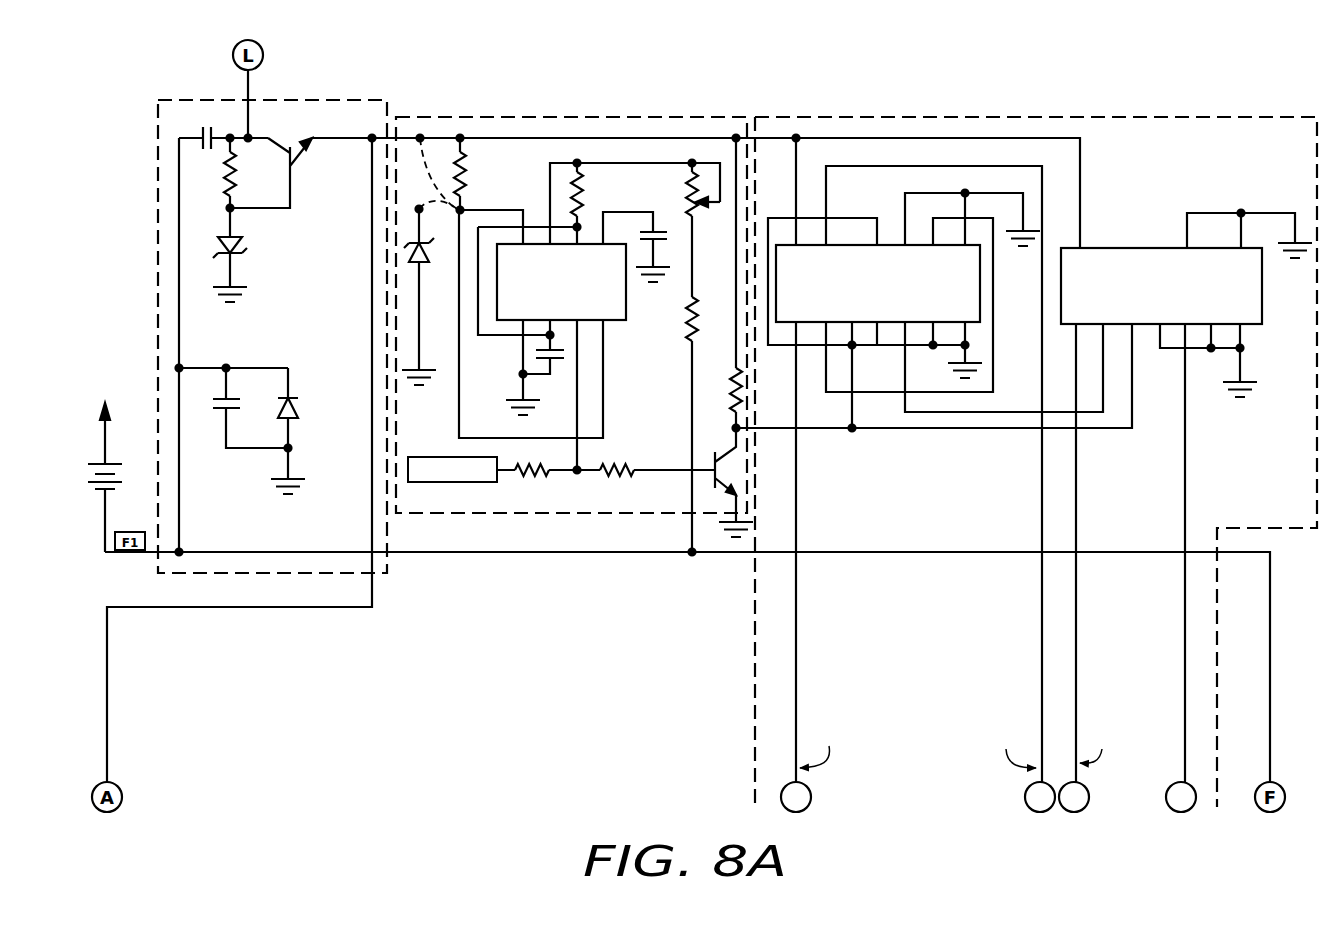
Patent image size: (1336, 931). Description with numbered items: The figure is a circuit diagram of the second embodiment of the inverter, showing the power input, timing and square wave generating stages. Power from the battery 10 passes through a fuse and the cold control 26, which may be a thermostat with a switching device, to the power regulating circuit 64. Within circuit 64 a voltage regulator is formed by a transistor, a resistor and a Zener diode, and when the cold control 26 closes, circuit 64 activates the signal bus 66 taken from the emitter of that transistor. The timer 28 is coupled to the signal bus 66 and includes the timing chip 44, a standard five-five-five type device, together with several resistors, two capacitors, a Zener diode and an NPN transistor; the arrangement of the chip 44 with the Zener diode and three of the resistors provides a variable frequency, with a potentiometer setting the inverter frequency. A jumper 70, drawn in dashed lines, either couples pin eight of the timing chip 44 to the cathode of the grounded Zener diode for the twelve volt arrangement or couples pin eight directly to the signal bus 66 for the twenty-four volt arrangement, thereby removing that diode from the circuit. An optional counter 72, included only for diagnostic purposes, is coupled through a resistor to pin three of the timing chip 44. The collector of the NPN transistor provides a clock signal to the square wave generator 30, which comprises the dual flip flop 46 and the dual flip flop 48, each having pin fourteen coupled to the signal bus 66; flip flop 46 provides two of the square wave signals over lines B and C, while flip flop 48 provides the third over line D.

The battery 10 is at (93, 464).
The cold control thermostat contacts 26 is at (203, 130).
The timer 28 is at (498, 116).
The square wave generator 30 is at (953, 116).
The timing chip 44 is at (585, 298).
The dual flip flop 46 is at (958, 297).
The dual flip flop 48 is at (1200, 299).
The power regulating circuit 64 is at (154, 230).
The signal bus 66 is at (752, 115).
The jumper 70 is at (436, 196).
The counter 72 is at (434, 454).